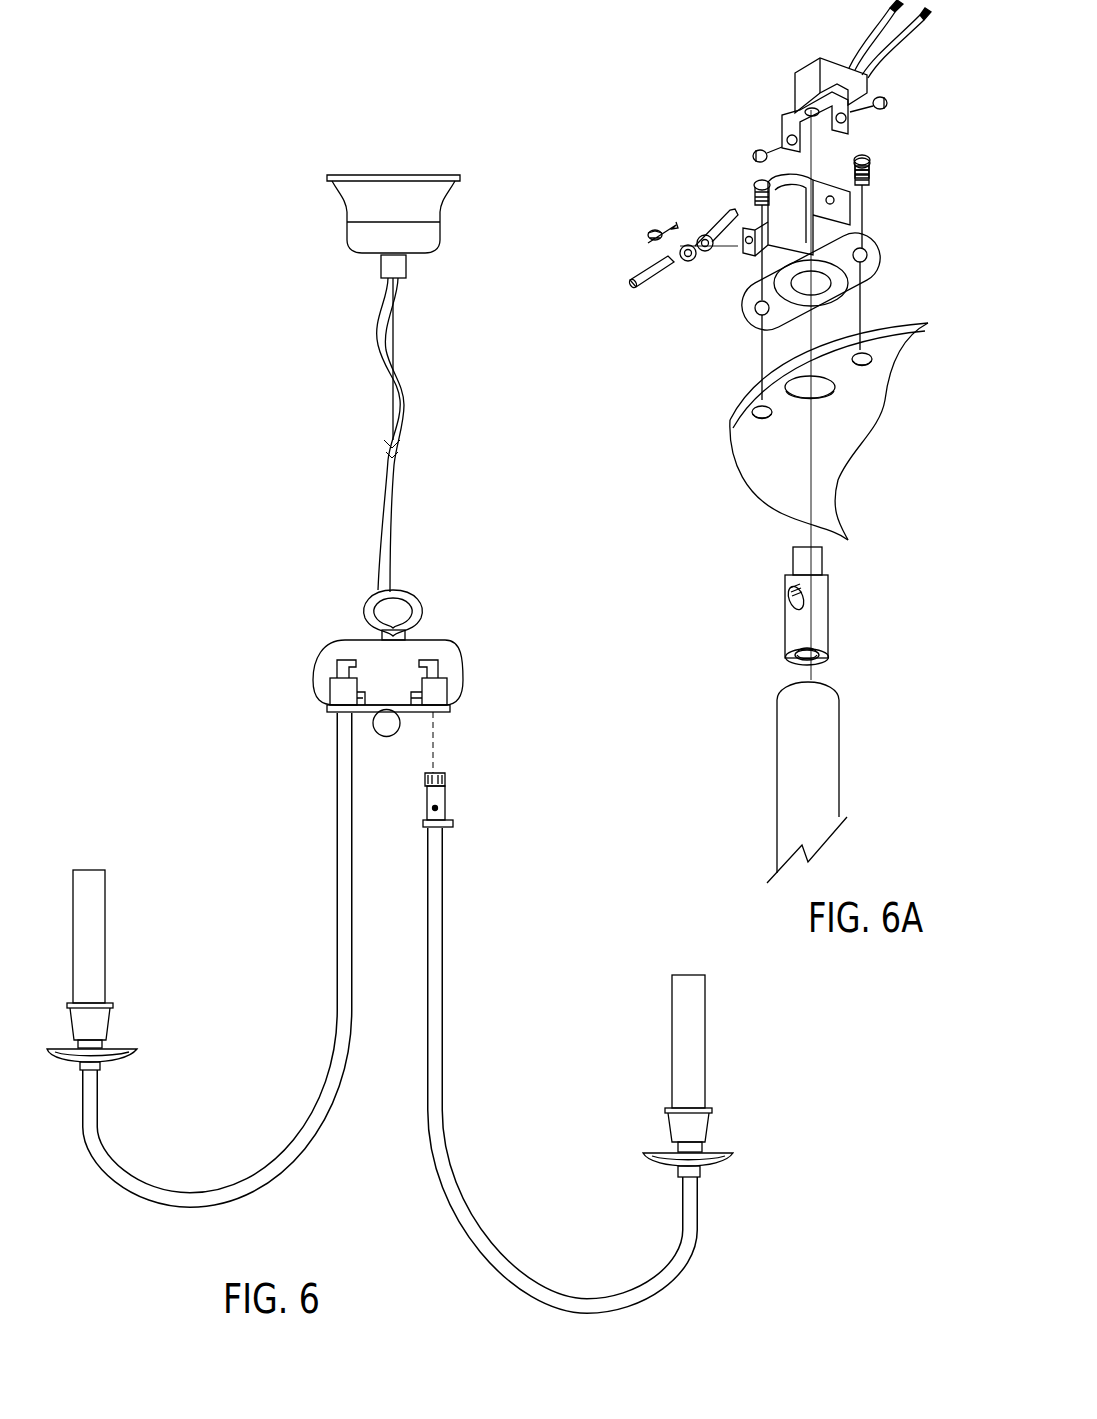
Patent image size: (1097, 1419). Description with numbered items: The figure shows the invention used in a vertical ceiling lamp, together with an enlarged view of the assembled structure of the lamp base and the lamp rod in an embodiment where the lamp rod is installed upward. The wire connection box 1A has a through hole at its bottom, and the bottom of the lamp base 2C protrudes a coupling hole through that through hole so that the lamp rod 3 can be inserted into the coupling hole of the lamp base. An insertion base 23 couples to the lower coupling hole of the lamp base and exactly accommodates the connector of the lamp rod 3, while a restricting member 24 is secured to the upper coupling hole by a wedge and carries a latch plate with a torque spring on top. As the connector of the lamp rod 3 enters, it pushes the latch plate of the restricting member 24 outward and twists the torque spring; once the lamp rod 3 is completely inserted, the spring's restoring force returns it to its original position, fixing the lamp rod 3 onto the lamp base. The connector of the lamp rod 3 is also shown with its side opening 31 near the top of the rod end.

In FIG. 6A, the insertion base 23 is at (810, 78).
In FIG. 6A, the restricting member 24 is at (680, 208).
In FIG. 6A, the lamp base 2C is at (848, 220).
In FIG. 6, the wire connection box 1A is at (430, 647).
In FIG. 6A, the wire connection box 1A is at (763, 447).
In FIG. 6A, the side hole of connector 31 is at (790, 595).
In FIG. 6, the lamp rod 3 is at (442, 807).
In FIG. 6A, the lamp rod 3 is at (802, 605).